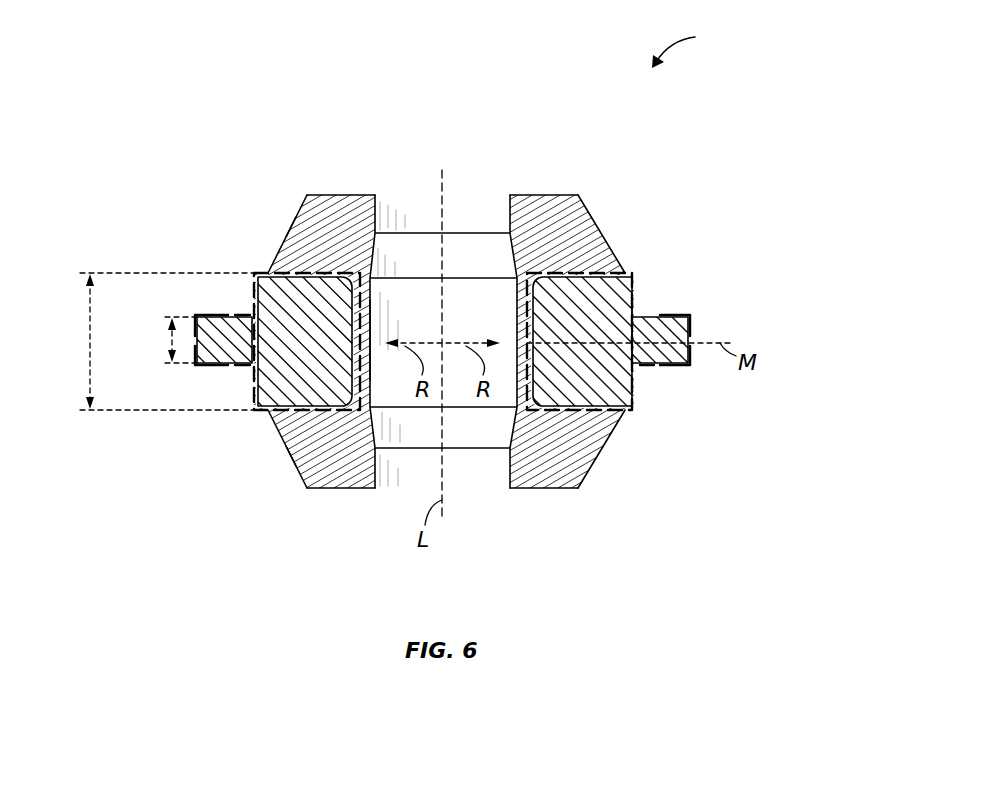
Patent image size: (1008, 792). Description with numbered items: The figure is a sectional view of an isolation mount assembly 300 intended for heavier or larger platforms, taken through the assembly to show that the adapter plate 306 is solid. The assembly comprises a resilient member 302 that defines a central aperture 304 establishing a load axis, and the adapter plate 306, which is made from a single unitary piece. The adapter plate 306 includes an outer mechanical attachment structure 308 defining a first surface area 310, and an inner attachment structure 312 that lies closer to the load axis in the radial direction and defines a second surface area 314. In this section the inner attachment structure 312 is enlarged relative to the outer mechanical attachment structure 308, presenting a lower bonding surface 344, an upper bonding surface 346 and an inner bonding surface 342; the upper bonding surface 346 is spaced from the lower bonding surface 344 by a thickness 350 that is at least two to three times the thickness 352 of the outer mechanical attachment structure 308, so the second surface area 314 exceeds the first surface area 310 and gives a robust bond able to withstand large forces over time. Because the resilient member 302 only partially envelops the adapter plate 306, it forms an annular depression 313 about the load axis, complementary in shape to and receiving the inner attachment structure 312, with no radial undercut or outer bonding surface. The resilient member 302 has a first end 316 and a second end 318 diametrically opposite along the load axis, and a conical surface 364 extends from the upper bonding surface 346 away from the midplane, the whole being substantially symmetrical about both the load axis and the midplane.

The isolation mount assembly 300 is at (700, 47).
The resilient member 302 is at (604, 242).
The central aperture 304 is at (490, 213).
The adapter plate 306 is at (636, 315).
The outer mechanical attachment structure 308 is at (665, 332).
The first surface area 310 is at (218, 367).
The inner attachment structure 312 is at (595, 316).
The annular depression 313 is at (318, 394).
The second surface area 314 is at (262, 272).
The first end 316 is at (545, 490).
The second end 318 is at (340, 194).
The inner bonding surface 342 is at (356, 301).
The lower bonding surface 344 is at (297, 414).
The upper bonding surface 346 is at (323, 270).
The thickness 350 is at (90, 340).
The thickness 352 is at (172, 340).
The conical surface 364 is at (293, 217).